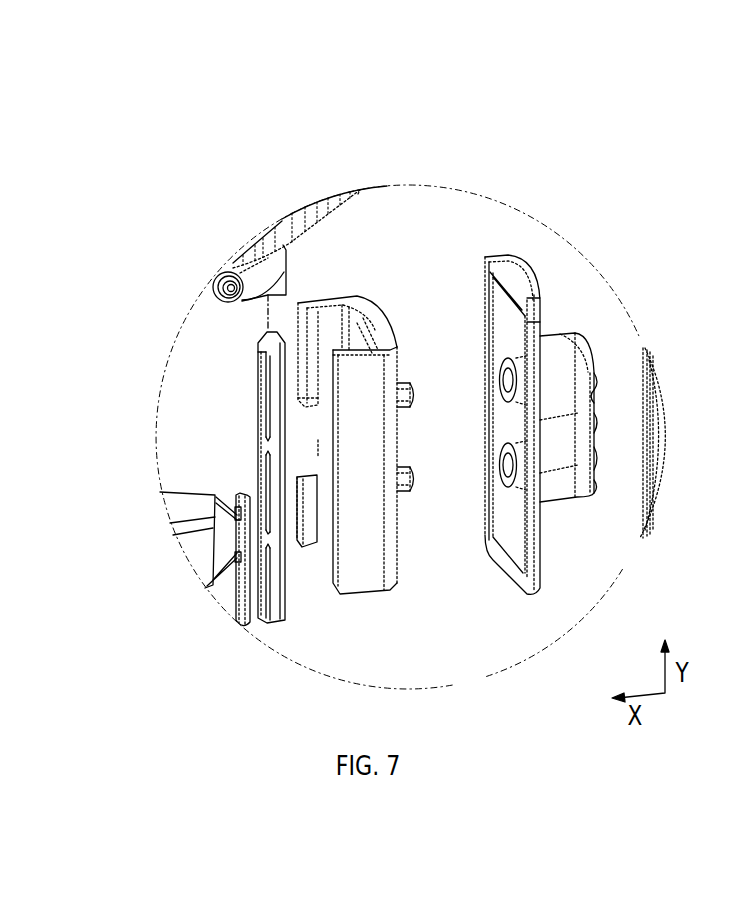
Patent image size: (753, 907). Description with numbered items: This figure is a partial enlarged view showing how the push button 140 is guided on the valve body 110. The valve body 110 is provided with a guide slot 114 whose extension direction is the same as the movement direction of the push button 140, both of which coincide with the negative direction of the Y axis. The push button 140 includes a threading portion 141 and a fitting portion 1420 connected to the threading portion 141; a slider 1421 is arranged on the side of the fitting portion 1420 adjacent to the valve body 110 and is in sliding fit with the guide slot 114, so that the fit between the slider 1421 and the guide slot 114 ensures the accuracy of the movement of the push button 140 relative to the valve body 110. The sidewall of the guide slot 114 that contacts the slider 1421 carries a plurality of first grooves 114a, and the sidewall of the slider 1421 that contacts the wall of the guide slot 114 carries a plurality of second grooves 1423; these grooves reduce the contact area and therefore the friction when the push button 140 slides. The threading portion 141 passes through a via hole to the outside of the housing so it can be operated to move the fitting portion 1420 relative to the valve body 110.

The valve body 110 is at (210, 364).
The guide slot 114 is at (262, 475).
The first groove 114a is at (264, 422).
The second groove 1423 is at (310, 448).
The push button 140 is at (450, 92).
The fitting portion 1420 is at (362, 377).
The slider 1421 is at (333, 547).
The threading portion 141 is at (547, 380).